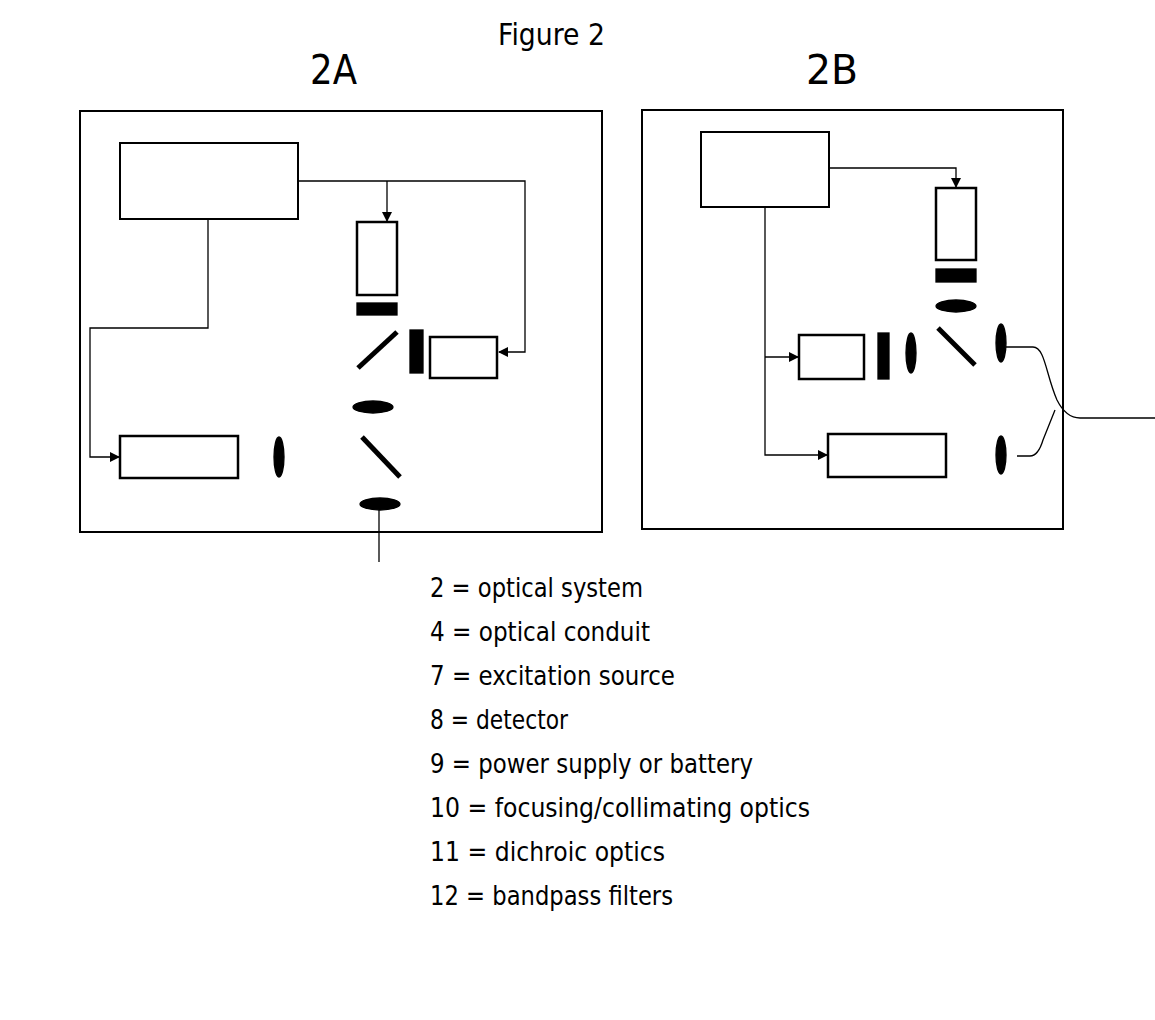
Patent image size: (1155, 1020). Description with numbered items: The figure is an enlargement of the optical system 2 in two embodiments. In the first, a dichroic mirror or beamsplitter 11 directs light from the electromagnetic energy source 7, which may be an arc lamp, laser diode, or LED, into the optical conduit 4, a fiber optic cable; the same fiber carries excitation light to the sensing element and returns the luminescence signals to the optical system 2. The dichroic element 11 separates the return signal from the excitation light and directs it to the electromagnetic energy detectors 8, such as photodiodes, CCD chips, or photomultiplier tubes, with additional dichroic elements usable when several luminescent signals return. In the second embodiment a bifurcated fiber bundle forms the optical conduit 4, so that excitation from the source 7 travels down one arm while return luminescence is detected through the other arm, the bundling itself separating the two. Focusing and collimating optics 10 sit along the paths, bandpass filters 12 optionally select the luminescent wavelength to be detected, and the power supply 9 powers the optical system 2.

In FIG. 2A, the optical system 2 is at (341, 321).
In FIG. 2B, the optical system 2 is at (852, 319).
In FIG. 2A, the optical conduit 4 is at (359, 538).
In FIG. 2B, the optical conduit 4 is at (1080, 401).
In FIG. 2A, the electromagnetic energy source 7 is at (179, 457).
In FIG. 2B, the electromagnetic energy source 7 is at (887, 455).
In FIG. 2A, the electromagnetic energy detector 8 is at (427, 300).
In FIG. 2B, the electromagnetic energy detector 8 is at (887, 283).
In FIG. 2A, the power supply 9 is at (307, 300).
In FIG. 2B, the power supply 9 is at (828, 293).
In FIG. 2A, the focusing/collimating optics 10 is at (358, 487).
In FIG. 2B, the focusing/collimating optics 10 is at (968, 410).
In FIG. 2A, the dichroic mirror or beamsplitter 11 is at (398, 401).
In FIG. 2B, the dichroic mirror or beamsplitter 11 is at (953, 354).
In FIG. 2A, the bandpass filters 12 is at (407, 305).
In FIG. 2B, the bandpass filters 12 is at (927, 270).